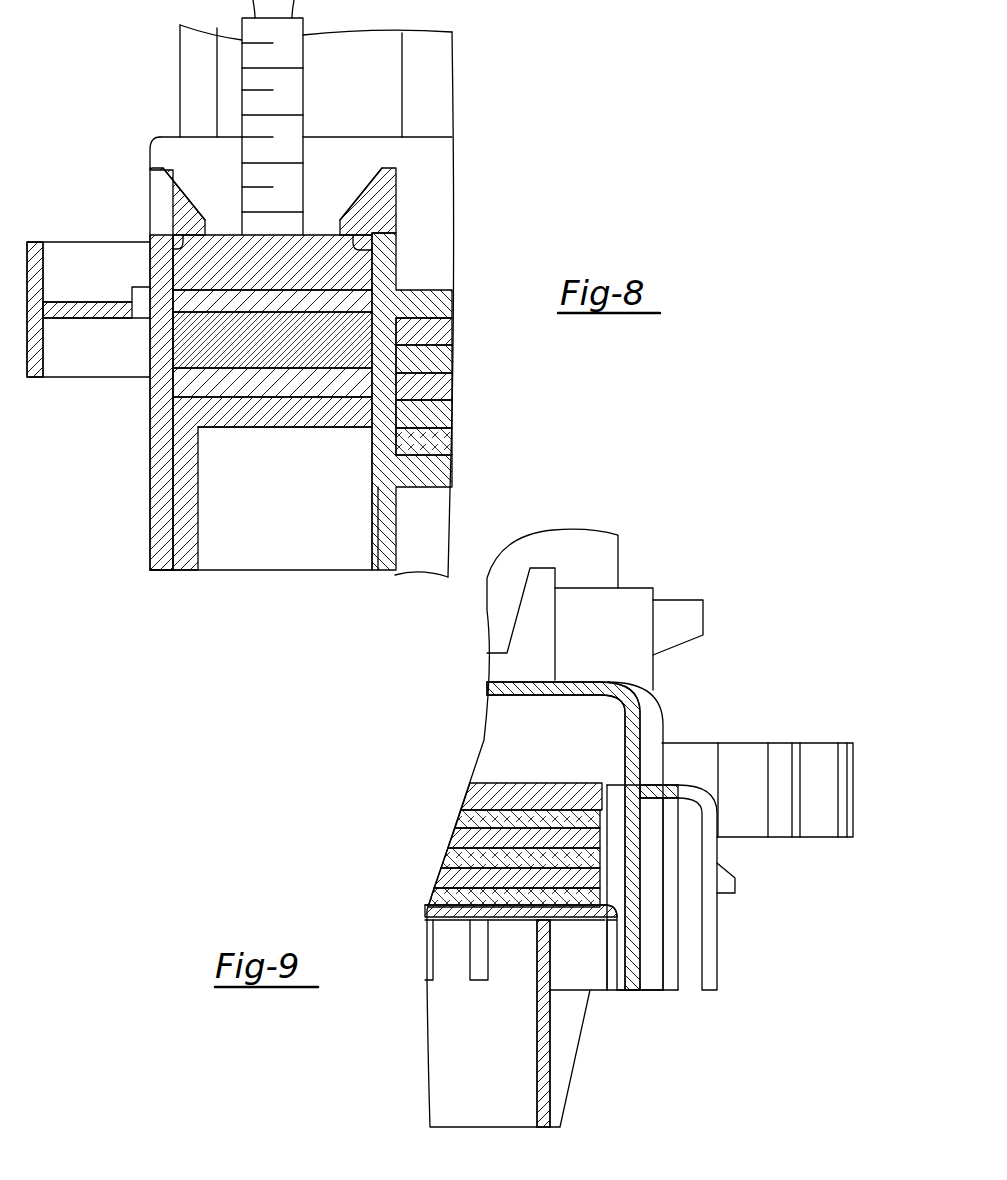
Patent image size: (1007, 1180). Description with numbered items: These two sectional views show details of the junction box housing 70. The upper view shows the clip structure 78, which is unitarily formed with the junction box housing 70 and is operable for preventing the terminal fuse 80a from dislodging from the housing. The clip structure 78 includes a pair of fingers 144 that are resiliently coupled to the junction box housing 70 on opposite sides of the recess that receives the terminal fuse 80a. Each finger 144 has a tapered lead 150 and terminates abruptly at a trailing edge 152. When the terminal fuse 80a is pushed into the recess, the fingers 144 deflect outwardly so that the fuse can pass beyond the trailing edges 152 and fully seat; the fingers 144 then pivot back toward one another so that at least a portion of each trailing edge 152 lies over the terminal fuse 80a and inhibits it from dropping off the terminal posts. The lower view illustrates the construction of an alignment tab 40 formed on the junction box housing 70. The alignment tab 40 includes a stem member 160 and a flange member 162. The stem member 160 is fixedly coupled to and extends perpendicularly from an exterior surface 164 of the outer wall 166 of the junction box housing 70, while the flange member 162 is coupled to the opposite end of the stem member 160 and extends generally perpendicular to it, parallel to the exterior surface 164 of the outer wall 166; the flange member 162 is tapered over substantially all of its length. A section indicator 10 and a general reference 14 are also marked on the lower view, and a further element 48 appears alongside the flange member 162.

In FIG. 9, the section line for FIG. 10 is at (648, 525).
In FIG. 9, the fuel rail / body assembly 14 is at (418, 852).
In FIG. 9, the alignment tab 40 is at (664, 996).
In FIG. 9, the L-shaped bracket 48 is at (710, 944).
In FIG. 8, the junction box housing 70 is at (430, 292).
In FIG. 9, the junction box housing 70 is at (670, 698).
In FIG. 8, the clip structure 78 is at (146, 224).
In FIG. 8, the terminal fuse 80a is at (344, 274).
In FIG. 8, the finger 144 is at (159, 160).
In FIG. 8, the tapered lead 150 is at (184, 196).
In FIG. 8, the trailing edge 152 is at (178, 243).
In FIG. 9, the stem member 160 is at (612, 932).
In FIG. 9, the flange member 162 is at (673, 862).
In FIG. 9, the exterior surface 164 is at (652, 988).
In FIG. 9, the outer wall 166 is at (633, 784).